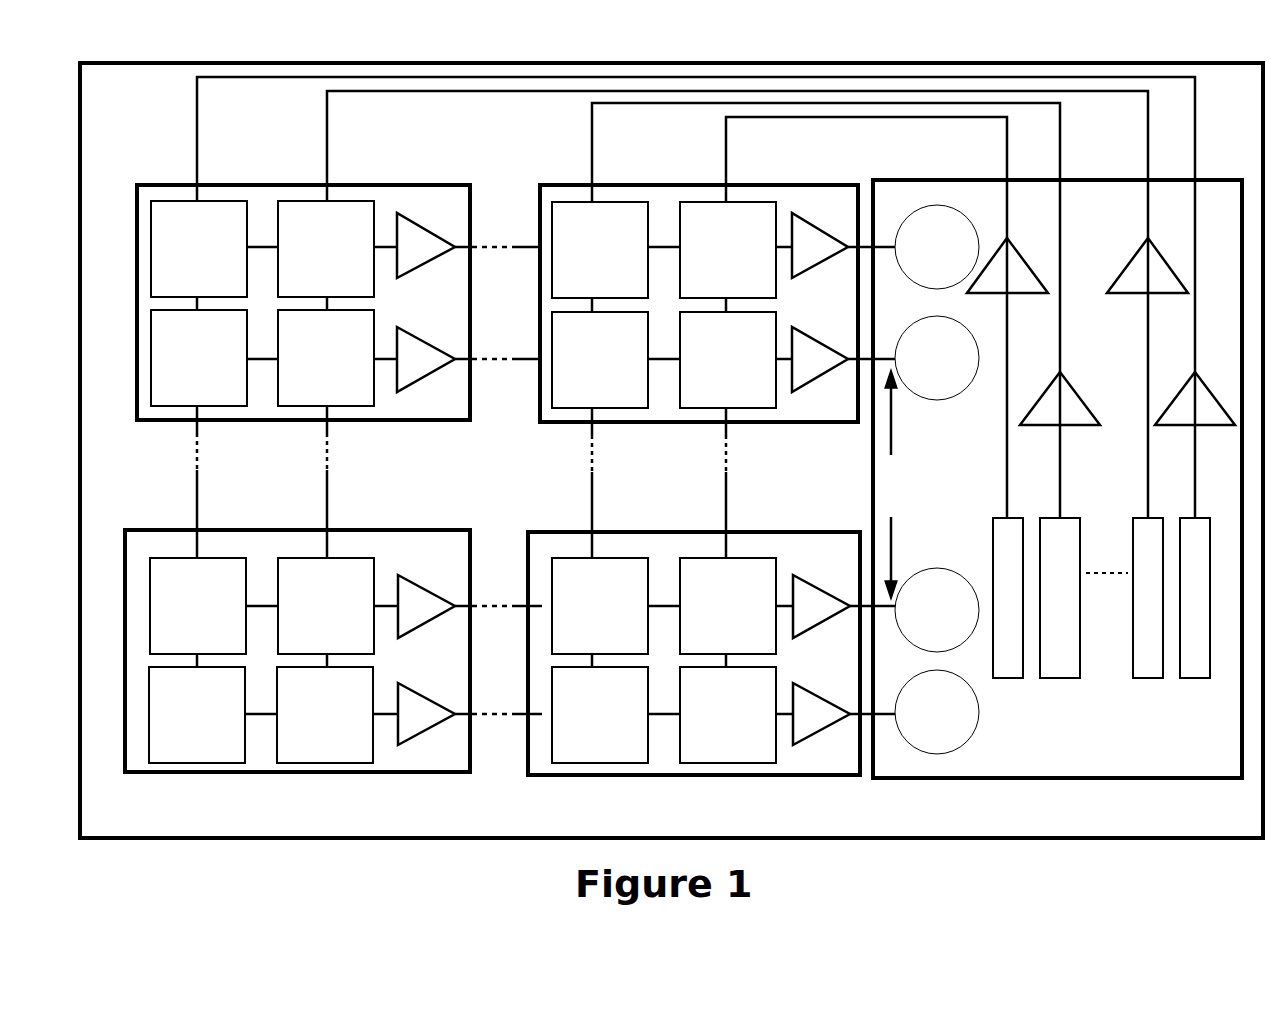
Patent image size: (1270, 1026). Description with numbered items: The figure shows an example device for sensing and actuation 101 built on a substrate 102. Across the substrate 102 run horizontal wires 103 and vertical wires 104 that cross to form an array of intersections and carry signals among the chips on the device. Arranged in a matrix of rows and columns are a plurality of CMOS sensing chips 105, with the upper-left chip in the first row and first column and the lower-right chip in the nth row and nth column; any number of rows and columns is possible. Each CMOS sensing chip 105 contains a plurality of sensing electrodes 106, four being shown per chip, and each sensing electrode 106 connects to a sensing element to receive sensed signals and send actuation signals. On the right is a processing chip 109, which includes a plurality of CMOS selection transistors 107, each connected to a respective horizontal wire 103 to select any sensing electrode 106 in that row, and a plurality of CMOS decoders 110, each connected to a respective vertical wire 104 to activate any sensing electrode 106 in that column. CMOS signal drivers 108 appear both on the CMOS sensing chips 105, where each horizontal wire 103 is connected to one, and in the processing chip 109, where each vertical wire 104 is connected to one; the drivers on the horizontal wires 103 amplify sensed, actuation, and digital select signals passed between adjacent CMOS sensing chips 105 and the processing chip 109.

The device for sensing and actuation 101 is at (671, 438).
The substrate 102 is at (1200, 830).
The horizontal wires 103 is at (895, 484).
The vertical wires 104 is at (992, 128).
The CMOS sensing chips 105 is at (170, 184).
The sensing electrodes 106 is at (471, 482).
The CMOS selection transistors 107 is at (913, 479).
The CMOS signal drivers 108 is at (816, 479).
The processing chip 109 is at (1196, 766).
The CMOS decoders 110 is at (1101, 598).